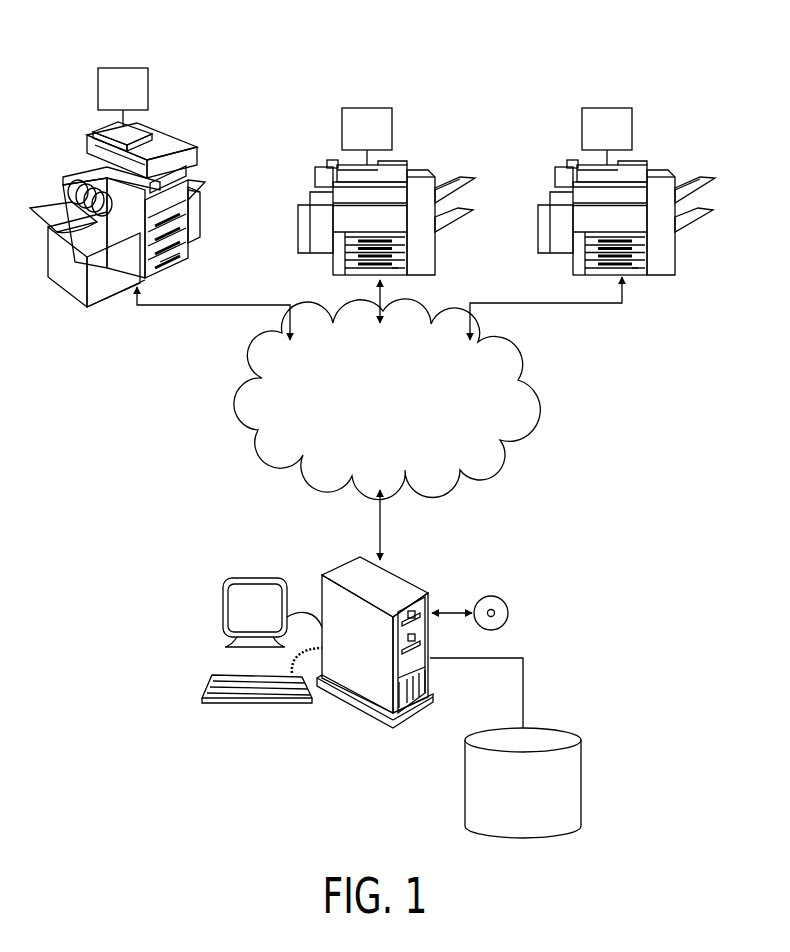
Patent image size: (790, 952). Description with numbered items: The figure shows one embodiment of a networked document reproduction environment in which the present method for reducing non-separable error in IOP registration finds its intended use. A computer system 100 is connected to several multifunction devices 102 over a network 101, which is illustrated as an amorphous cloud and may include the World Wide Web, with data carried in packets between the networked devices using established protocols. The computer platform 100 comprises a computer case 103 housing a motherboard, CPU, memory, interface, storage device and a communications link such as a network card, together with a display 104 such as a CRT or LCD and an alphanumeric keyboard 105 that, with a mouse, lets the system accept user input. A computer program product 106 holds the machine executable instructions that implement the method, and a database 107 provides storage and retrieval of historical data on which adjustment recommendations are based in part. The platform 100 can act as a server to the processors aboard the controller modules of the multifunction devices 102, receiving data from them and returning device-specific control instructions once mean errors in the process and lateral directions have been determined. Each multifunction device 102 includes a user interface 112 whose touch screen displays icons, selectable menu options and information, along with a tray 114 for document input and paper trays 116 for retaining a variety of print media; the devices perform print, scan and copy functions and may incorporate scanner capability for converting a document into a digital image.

The computer system 100 is at (511, 563).
The network 101 is at (527, 404).
The multifunction device 102 is at (181, 99).
The computer case 103 is at (394, 576).
The display 104 is at (257, 578).
The alphanumeric keyboard 105 is at (258, 705).
The computer program product 106 is at (508, 622).
The database 107 is at (563, 731).
The user interface 112 is at (123, 68).
The tray 114 is at (194, 190).
The paper trays 116 is at (181, 254).